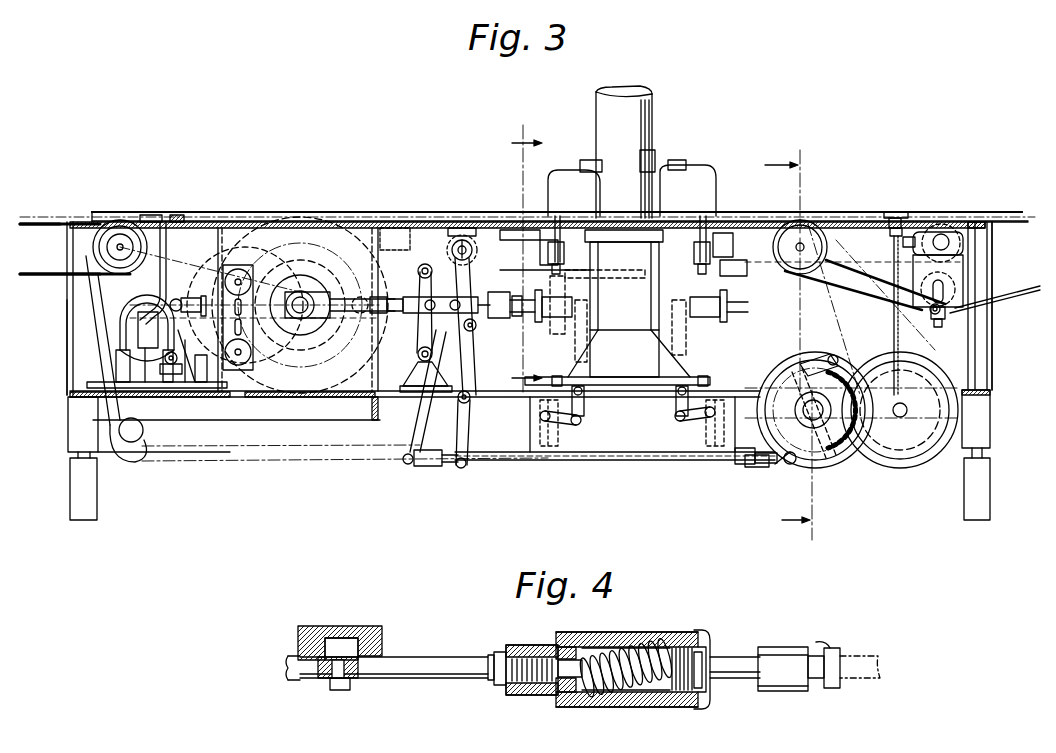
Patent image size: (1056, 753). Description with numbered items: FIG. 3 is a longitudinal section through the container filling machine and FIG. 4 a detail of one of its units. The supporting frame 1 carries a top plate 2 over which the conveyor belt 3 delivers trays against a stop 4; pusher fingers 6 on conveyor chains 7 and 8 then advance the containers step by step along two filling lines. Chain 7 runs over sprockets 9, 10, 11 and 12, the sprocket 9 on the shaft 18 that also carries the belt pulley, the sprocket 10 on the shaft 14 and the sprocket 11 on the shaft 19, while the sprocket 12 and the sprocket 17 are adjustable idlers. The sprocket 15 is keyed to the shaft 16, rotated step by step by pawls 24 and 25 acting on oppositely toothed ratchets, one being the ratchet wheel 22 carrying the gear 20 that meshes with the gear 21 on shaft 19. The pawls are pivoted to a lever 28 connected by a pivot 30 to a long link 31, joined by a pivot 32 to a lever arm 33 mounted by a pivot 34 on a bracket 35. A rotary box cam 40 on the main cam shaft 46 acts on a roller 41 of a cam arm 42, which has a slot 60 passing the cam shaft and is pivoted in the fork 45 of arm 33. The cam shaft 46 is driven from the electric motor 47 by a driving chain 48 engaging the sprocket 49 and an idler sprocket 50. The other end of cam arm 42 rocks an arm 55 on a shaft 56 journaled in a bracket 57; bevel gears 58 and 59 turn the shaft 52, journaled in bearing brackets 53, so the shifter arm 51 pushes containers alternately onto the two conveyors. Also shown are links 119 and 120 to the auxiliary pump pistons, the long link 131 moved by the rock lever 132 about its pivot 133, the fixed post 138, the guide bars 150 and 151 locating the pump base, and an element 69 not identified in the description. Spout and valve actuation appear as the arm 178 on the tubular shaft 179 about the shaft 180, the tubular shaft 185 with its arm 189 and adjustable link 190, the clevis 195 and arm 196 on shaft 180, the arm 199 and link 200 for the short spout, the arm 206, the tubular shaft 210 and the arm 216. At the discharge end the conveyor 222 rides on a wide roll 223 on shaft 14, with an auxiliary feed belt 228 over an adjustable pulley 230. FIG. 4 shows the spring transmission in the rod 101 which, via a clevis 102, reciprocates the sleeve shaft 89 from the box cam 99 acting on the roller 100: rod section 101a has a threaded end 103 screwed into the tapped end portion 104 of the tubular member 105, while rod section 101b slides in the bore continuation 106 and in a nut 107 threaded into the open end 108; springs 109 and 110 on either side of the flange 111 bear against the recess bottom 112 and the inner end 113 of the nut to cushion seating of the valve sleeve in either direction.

In FIG. 3, the supporting frame 1 is at (66, 334).
In FIG. 3, the top plate 2 is at (80, 213).
In FIG. 3, the conveyor belt 3 is at (58, 222).
In FIG. 3, the stop 4 is at (181, 214).
In FIG. 3, the pusher fingers 6 is at (797, 344).
In FIG. 3, the conveyor chain 7 is at (938, 340).
In FIG. 3, the conveyor chain 8 is at (834, 309).
In FIG. 3, the sprocket 9 is at (100, 274).
In FIG. 3, the sprocket 10 is at (810, 262).
In FIG. 3, the sprocket 11 is at (885, 295).
In FIG. 3, the idler sprocket 12 is at (138, 452).
In FIG. 3, the shaft 14 is at (795, 252).
In FIG. 3, the sprocket 15 is at (785, 366).
In FIG. 3, the shaft 16 is at (806, 408).
In FIG. 3, the idler sprocket 17 is at (142, 432).
In FIG. 3, the shaft 18 is at (122, 245).
In FIG. 3, the shaft 19 is at (906, 410).
In FIG. 3, the gear 20 is at (846, 460).
In FIG. 3, the gear 21 is at (900, 468).
In FIG. 3, the ratchet wheel 22 is at (778, 370).
In FIG. 3, the pawl 24 is at (852, 299).
In FIG. 3, the pawl 25 is at (794, 316).
In FIG. 3, the lever 28 is at (826, 462).
In FIG. 3, the pivot 30 is at (786, 462).
In FIG. 3, the long link 31 is at (628, 455).
In FIG. 3, the pivot 32 is at (405, 464).
In FIG. 3, the lever arm 33 is at (420, 336).
In FIG. 3, the pivot 34 is at (420, 352).
In FIG. 3, the bracket 35 is at (415, 372).
In FIG. 3, the rotary box cam 40 is at (300, 305).
In FIG. 3, the roller 41 is at (358, 305).
In FIG. 3, the cam arm 42 is at (300, 305).
In FIG. 3, the fork 45 is at (452, 250).
In FIG. 3, the main cam shaft 46 is at (302, 293).
In FIG. 3, the electric motor 47 is at (118, 332).
In FIG. 3, the driving chain 48 is at (213, 300).
In FIG. 3, the sprocket 49 is at (300, 293).
In FIG. 3, the idler sprocket 50 is at (150, 214).
In FIG. 3, the shifter arm 51 is at (168, 264).
In FIG. 3, the shaft 52 is at (120, 360).
In FIG. 3, the bearing brackets 53 is at (118, 358).
In FIG. 3, the arm 55 is at (142, 312).
In FIG. 3, the shaft 56 is at (168, 366).
In FIG. 3, the bracket 57 is at (178, 368).
In FIG. 3, the bevel gear 58 is at (158, 368).
In FIG. 3, the bevel gear 59 is at (192, 362).
In FIG. 3, the slot 60 is at (302, 317).
In FIG. 3, the main housing 69 is at (628, 325).
In FIG. 3, the tubular member 105 is at (920, 314).
In FIG. 4, the tubular member 105 is at (628, 632).
In FIG. 3, the threaded open end portion 108 is at (898, 214).
In FIG. 4, the threaded open end portion 108 is at (690, 640).
In FIG. 3, the link 119 is at (576, 410).
In FIG. 3, the link 120 is at (672, 410).
In FIG. 3, the long link 131 is at (504, 464).
In FIG. 3, the rock lever 132 is at (470, 432).
In FIG. 3, the pivot 133 is at (470, 400).
In FIG. 3, the fixed post 138 is at (560, 434).
In FIG. 3, the guide bar 150 is at (556, 377).
In FIG. 3, the guide bar 151 is at (706, 378).
In FIG. 3, the arm 178 is at (493, 292).
In FIG. 3, the tubular shaft 179 is at (458, 240).
In FIG. 3, the transverse shaft 180 is at (464, 240).
In FIG. 3, the tubular shaft 185 is at (540, 252).
In FIG. 3, the arm 189 is at (552, 304).
In FIG. 3, the adjustable link 190 is at (550, 208).
In FIG. 3, the clevis 195 is at (460, 330).
In FIG. 3, the arm 196 is at (510, 300).
In FIG. 3, the arm 199 is at (719, 302).
In FIG. 3, the adjustable link 200 is at (712, 206).
In FIG. 3, the arm 206 is at (415, 280).
In FIG. 3, the tubular shaft 210 is at (545, 281).
In FIG. 3, the arm 216 is at (418, 310).
In FIG. 3, the discharge conveyor 222 is at (1008, 222).
In FIG. 3, the wide roll 223 is at (805, 235).
In FIG. 3, the auxiliary feed belt 228 is at (892, 262).
In FIG. 3, the pulley 230 is at (955, 256).
In FIG. 4, the slidable shaft 89 is at (862, 658).
In FIG. 4, the box cam 99 is at (372, 626).
In FIG. 4, the roller 100 is at (328, 645).
In FIG. 4, the pusher rod 101 is at (420, 658).
In FIG. 4, the rod section 101a is at (398, 682).
In FIG. 4, the rod section 101b is at (740, 680).
In FIG. 4, the clevis arrangement 102 is at (790, 650).
In FIG. 4, the threaded end portion 103 is at (508, 695).
In FIG. 4, the tapped end portion 104 is at (528, 648).
In FIG. 4, the bore continuation 106 is at (572, 708).
In FIG. 4, the nut 107 is at (706, 640).
In FIG. 4, the spring 109 is at (604, 692).
In FIG. 4, the spring 110 is at (672, 692).
In FIG. 4, the flange 111 is at (640, 692).
In FIG. 4, the recess bottom 112 is at (592, 640).
In FIG. 4, the inner end of nut 113 is at (696, 705).